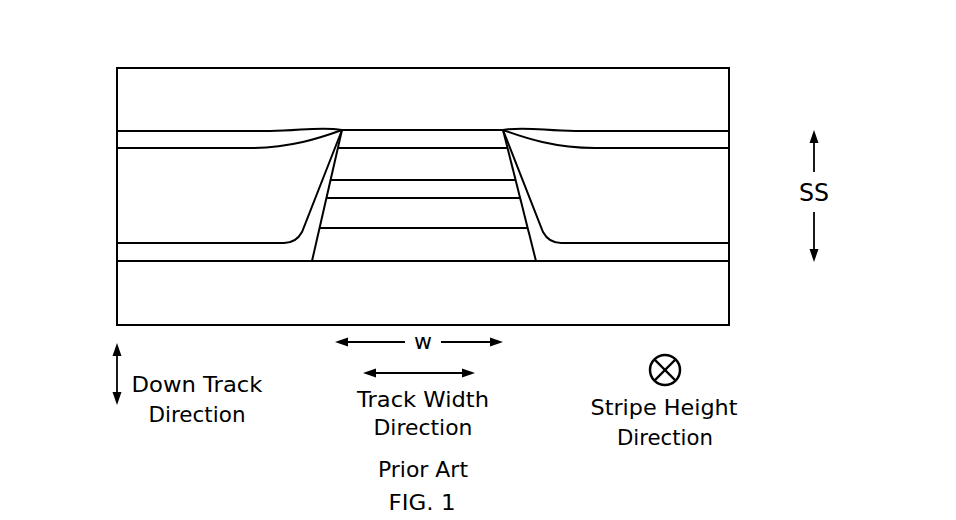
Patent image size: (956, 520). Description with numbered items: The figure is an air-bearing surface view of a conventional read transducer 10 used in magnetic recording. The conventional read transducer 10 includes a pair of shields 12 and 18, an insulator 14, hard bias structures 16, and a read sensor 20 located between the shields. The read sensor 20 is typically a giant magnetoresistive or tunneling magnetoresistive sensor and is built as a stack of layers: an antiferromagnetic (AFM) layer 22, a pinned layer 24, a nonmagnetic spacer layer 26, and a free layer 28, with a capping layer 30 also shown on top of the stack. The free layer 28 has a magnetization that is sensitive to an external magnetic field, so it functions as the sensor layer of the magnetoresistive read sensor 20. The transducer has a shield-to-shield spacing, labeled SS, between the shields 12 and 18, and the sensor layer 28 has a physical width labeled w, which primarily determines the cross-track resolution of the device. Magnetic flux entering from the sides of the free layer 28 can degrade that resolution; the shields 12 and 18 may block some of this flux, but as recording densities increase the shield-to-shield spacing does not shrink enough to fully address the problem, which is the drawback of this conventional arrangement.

The conventional read transducer 10 is at (409, 30).
The shield 12 is at (729, 303).
The insulator 14 is at (128, 262).
The hard bias structures 16 is at (117, 203).
The shield 18 is at (729, 115).
The read sensor 20 is at (497, 284).
The antiferromagnetic (AFM) layer 22 is at (327, 262).
The pinned layer 24 is at (504, 232).
The nonmagnetic spacer layer 26 is at (518, 190).
The free layer 28 is at (333, 165).
The capping layer 30 is at (472, 130).